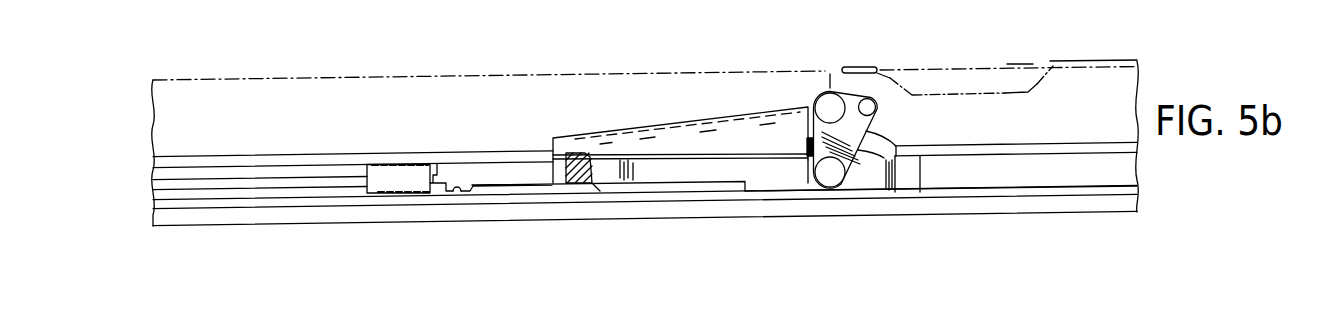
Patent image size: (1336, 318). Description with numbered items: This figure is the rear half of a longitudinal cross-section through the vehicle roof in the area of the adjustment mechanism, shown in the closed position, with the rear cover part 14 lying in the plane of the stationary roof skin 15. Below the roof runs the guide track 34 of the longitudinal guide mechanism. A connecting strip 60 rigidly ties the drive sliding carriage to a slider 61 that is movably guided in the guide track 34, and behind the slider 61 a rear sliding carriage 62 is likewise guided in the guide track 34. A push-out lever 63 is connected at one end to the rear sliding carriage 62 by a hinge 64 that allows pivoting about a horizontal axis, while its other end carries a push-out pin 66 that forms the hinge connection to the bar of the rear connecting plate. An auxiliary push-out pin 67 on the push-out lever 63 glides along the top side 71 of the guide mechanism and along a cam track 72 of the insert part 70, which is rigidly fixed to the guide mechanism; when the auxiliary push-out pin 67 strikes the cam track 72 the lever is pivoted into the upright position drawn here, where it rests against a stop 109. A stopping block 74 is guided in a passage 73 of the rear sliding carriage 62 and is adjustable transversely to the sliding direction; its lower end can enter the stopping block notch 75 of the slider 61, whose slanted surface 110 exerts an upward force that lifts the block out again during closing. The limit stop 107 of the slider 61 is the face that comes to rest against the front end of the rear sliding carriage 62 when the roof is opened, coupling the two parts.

The rear cover part 14 is at (557, 72).
The stationary roof skin 15 is at (1034, 63).
The guide track 34 is at (294, 194).
The connecting strip 60 is at (236, 184).
The slider 61 is at (394, 184).
The rear sliding carriage 62 is at (784, 178).
The push-out lever 63 is at (847, 165).
The hinge 64 is at (833, 184).
The push-out pin 66 is at (826, 103).
The auxiliary push-out pin 67 is at (866, 99).
The insert part 70 is at (691, 138).
The top side 71 is at (981, 148).
The cam track 72 is at (879, 134).
The passage 73 is at (601, 192).
The stopping block 74 is at (581, 172).
The stopping block notch 75 is at (458, 194).
The limit stop 107 is at (443, 165).
The stop 109 is at (810, 147).
The slanted surface 110 is at (466, 190).